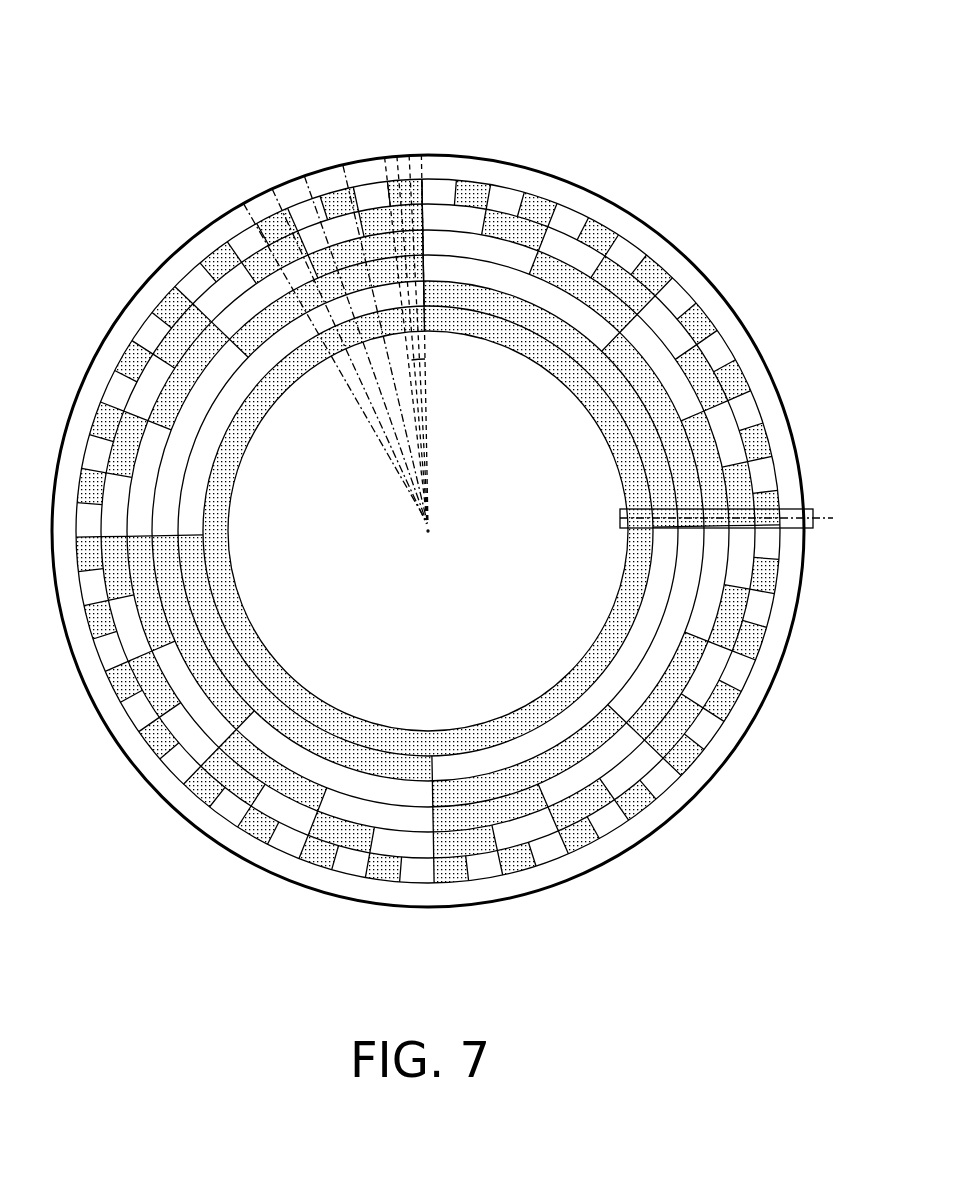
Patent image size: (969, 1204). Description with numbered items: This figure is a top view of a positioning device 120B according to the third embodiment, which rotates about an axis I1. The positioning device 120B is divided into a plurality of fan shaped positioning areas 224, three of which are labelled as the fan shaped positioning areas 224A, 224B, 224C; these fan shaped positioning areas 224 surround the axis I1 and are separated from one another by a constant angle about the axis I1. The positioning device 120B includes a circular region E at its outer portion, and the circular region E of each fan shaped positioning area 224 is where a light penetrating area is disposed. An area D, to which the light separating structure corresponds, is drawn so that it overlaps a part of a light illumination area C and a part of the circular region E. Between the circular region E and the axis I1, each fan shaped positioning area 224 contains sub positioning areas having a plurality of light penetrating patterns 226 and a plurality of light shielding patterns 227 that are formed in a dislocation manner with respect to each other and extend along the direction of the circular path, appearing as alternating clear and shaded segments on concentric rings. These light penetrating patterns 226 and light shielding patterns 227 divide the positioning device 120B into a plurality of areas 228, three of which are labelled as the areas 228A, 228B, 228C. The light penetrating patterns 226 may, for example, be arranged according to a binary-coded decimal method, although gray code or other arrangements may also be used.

The positioning device 120B is at (792, 941).
The light penetrating patterns 226 is at (453, 178).
The light shielding patterns 227 is at (660, 262).
The areas 228 is at (253, 272).
The area 228A is at (243, 203).
The area 228B is at (272, 189).
The area 228C is at (340, 168).
The fan shaped positioning areas 224 is at (397, 286).
The fan shaped positioning area 224A is at (397, 156).
The fan shaped positioning area 224B is at (409, 155).
The fan shaped positioning area 224C is at (422, 155).
The circular region E is at (773, 417).
The area D is at (782, 509).
The light illumination area C is at (739, 520).
The axis I1 is at (427, 526).